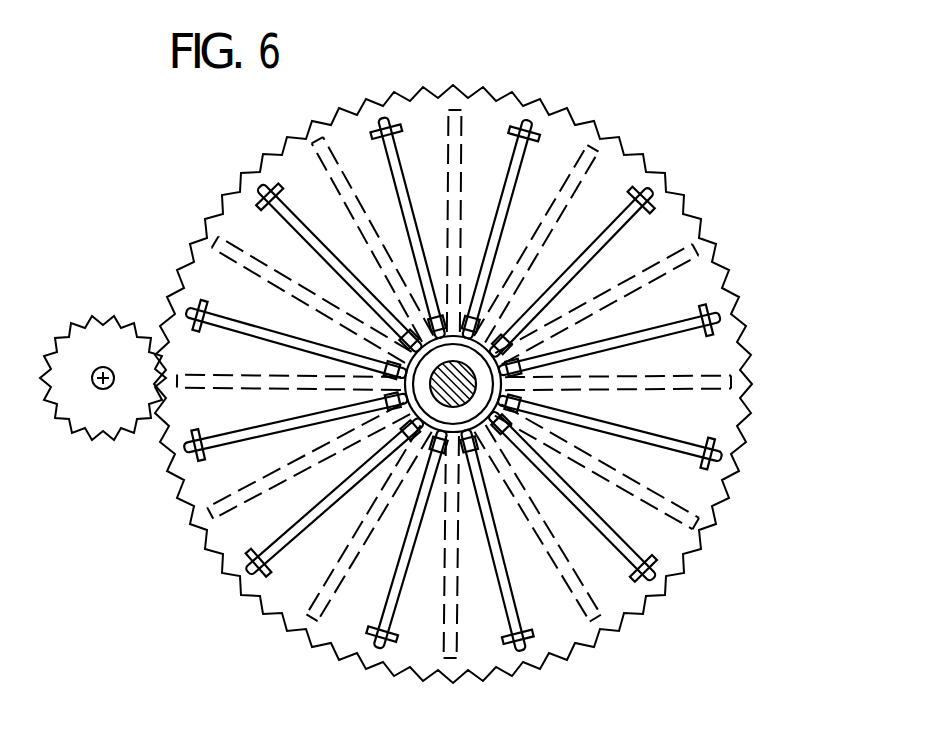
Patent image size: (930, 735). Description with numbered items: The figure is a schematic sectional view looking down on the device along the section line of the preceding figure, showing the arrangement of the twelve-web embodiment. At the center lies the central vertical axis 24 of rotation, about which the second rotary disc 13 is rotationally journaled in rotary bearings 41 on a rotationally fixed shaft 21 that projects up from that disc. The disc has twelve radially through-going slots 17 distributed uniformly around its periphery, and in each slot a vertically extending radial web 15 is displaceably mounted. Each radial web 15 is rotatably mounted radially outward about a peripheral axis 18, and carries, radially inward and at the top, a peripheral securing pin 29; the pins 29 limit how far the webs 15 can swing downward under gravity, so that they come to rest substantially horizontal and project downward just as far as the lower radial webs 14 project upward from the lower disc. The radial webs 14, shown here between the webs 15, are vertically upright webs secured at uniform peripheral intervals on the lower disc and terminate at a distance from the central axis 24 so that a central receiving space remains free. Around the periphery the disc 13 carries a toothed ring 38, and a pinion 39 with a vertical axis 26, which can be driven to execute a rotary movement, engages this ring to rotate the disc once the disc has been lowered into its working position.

The second rotary disc 13 is at (652, 258).
The radial webs 14 is at (477, 386).
The radial webs 15 is at (485, 347).
The radially through-going slots 17 is at (464, 354).
The peripheral axes 18 is at (401, 124).
The shaft 21 is at (530, 501).
The central vertical axis 24 is at (453, 384).
The vertical axis 26 is at (103, 375).
The peripheral securing pins 29 is at (530, 418).
The toothed ring 38 is at (481, 386).
The pinion 39 is at (85, 433).
The rotary bearings 41 is at (484, 389).